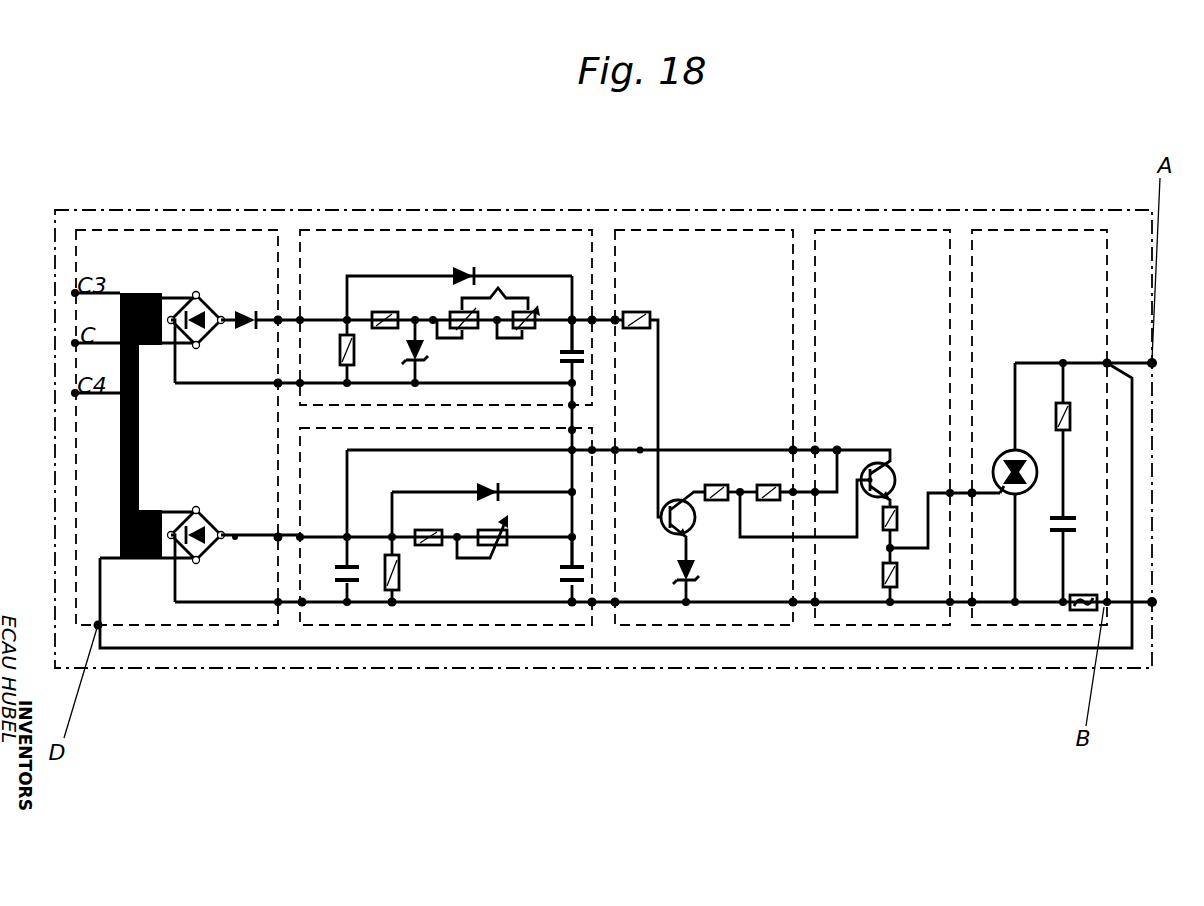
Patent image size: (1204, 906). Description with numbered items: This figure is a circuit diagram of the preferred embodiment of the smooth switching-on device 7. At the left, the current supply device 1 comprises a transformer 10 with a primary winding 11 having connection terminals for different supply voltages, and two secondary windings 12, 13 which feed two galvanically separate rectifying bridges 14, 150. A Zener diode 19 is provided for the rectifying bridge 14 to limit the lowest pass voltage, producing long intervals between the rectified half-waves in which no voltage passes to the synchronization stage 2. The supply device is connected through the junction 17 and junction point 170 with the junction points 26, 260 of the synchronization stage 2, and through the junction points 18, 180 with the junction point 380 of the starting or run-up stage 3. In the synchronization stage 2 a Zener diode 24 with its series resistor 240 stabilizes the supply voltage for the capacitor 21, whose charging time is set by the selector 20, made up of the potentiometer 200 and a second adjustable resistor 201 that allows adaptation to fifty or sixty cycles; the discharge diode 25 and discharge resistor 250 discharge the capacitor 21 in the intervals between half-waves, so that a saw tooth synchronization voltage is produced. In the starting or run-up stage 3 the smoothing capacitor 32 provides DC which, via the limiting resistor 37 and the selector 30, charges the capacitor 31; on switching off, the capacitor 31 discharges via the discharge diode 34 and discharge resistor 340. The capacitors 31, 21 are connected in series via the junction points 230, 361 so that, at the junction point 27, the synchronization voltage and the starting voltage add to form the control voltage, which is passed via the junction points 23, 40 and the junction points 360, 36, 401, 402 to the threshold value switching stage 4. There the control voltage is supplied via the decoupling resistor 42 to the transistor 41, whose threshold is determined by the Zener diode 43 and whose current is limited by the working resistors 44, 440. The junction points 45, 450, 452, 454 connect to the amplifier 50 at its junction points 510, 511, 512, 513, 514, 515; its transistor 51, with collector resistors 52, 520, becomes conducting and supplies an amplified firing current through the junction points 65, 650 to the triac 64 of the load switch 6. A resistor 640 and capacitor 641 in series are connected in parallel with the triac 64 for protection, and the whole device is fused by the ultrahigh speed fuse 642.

The current supply device 1 is at (173, 624).
The synchronization stage 2 is at (508, 248).
The starting or run-up stage 3 is at (413, 593).
The limiting or threshold value switching stage 4 is at (755, 245).
The load switch 6 is at (1055, 247).
The smooth switching-on device 7 is at (840, 102).
The transformer 10 is at (137, 463).
The primary winding 11 is at (130, 600).
The secondary winding 12 is at (150, 292).
The secondary winding 13 is at (150, 600).
The rectifier bridge 14 is at (184, 312).
The junction 17 is at (278, 318).
The junction point 18 is at (236, 542).
The Zener diode 19 is at (226, 316).
The selector 20 is at (500, 292).
The capacitor 21 is at (594, 318).
The junction point 23 is at (582, 358).
The Zener diode 24 is at (433, 318).
The discharge diode 25 is at (455, 310).
The junction point 26 is at (300, 318).
The junction point 27 is at (574, 318).
The selector 30 is at (502, 548).
The capacitor 31 is at (558, 586).
The smoothing capacitor 32 is at (352, 597).
The discharge diode 34 is at (487, 503).
The junction point 36 is at (574, 606).
The limiting resistor 37 is at (440, 547).
The junction point 40 is at (638, 311).
The transistor 41 is at (678, 536).
The decoupling resistor 42 is at (660, 330).
The Zener diode 43 is at (692, 576).
The working resistor 44 is at (718, 502).
The junction point 45 is at (791, 447).
The amplifier 50 is at (903, 253).
The transistor 51 is at (950, 489).
The resistor 52 is at (887, 534).
The triac 64 is at (1062, 401).
The junction point 65 is at (1015, 448).
The rectifier bridge 150 is at (200, 563).
The junction point 170 is at (238, 310).
The junction point 180 is at (278, 542).
The potentiometer 200 is at (538, 308).
The adjustable resistor 201 is at (462, 268).
The junction point 230 is at (617, 318).
The resistor 240 is at (388, 313).
The discharge resistor 250 is at (350, 340).
The junction point 260 is at (302, 381).
The discharge resistor 340 is at (392, 606).
The junction point 360 is at (592, 606).
The junction point 361 is at (570, 545).
The junction point 380 is at (278, 606).
The junction point 401 is at (640, 453).
The junction point 402 is at (616, 606).
The working resistor 440 is at (768, 503).
The junction point 450 is at (813, 447).
The junction point 452 is at (796, 606).
The junction point 454 is at (792, 496).
The junction point 510 is at (836, 447).
The junction point 511 is at (872, 466).
The junction point 512 is at (820, 497).
The junction point 513 is at (816, 606).
The junction point 514 is at (975, 490).
The junction point 515 is at (948, 606).
The resistor 520 is at (891, 606).
The resistor 640 is at (1108, 360).
The capacitor 641 is at (1058, 534).
The ultrahigh speed fuse 642 is at (1080, 612).
The junction point 650 is at (970, 608).